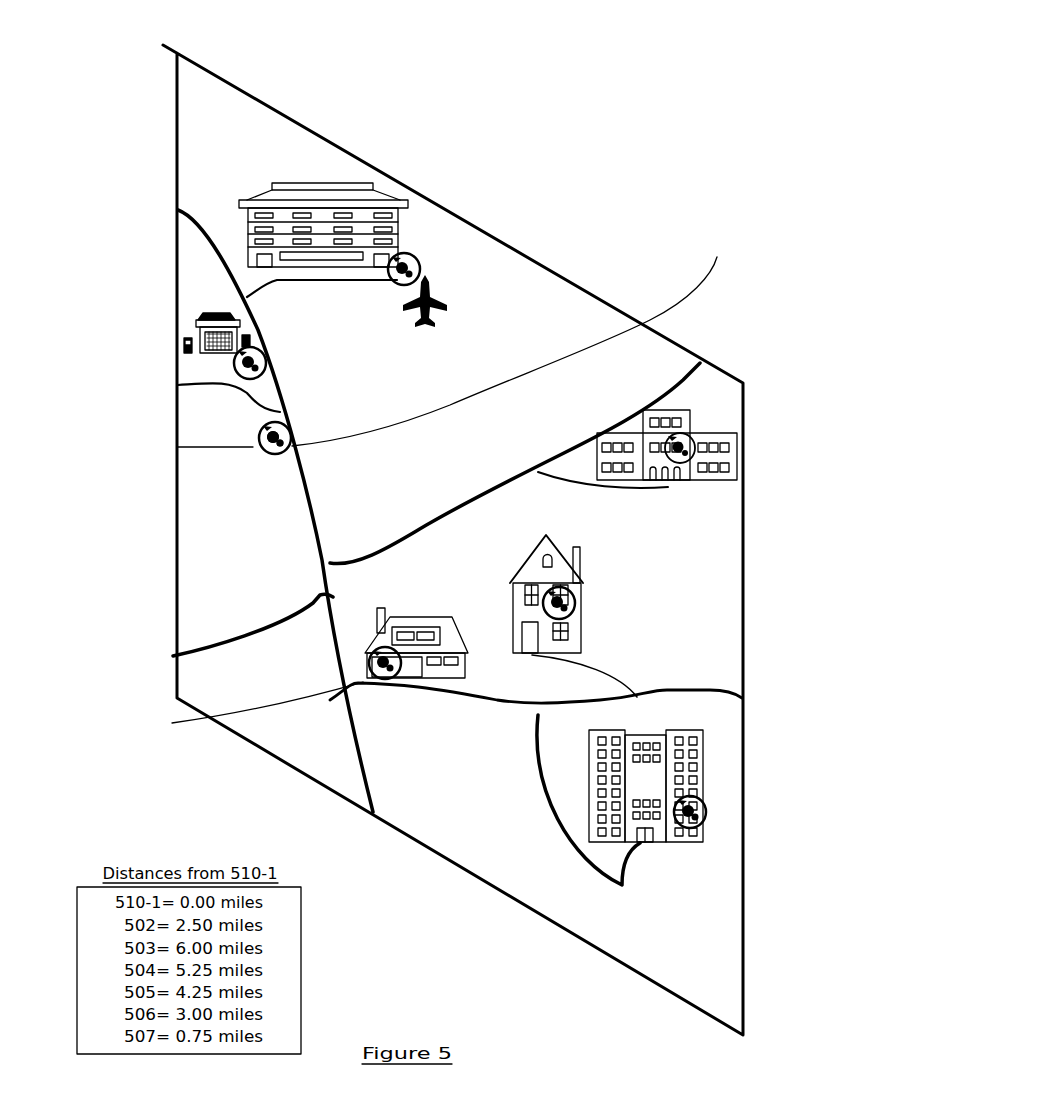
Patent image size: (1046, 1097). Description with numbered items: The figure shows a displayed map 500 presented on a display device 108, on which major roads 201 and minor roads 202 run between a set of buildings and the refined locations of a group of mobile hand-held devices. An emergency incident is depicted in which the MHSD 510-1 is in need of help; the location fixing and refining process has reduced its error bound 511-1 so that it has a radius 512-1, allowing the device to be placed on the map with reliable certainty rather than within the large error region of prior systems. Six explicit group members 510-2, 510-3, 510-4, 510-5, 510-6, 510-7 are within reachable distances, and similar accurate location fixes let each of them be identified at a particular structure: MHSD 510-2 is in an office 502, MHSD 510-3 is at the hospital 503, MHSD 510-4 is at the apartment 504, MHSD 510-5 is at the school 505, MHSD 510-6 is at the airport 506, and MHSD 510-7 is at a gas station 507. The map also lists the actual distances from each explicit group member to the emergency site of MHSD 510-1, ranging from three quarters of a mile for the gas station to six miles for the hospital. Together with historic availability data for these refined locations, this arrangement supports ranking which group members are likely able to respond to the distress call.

The displayed map 500 is at (548, 112).
The display device 108 is at (512, 270).
The major roads 201 is at (693, 373).
The minor roads 202 is at (667, 690).
The office 502 is at (363, 682).
The hospital 503 is at (703, 767).
The apartment 504 is at (583, 565).
The school 505 is at (715, 438).
The airport 506 is at (317, 188).
The gas station 507 is at (195, 325).
The MHSD in need of help 510-1 is at (273, 455).
The explicit group member MHSD 510-2 is at (383, 680).
The explicit group member MHSD 510-3 is at (705, 822).
The explicit group member MHSD 510-4 is at (575, 604).
The explicit group member MHSD 510-5 is at (693, 448).
The explicit group member MHSD 510-6 is at (420, 253).
The explicit group member MHSD 510-7 is at (233, 367).
The error bound 511-1 is at (267, 452).
The error bound radius 512-1 is at (260, 435).